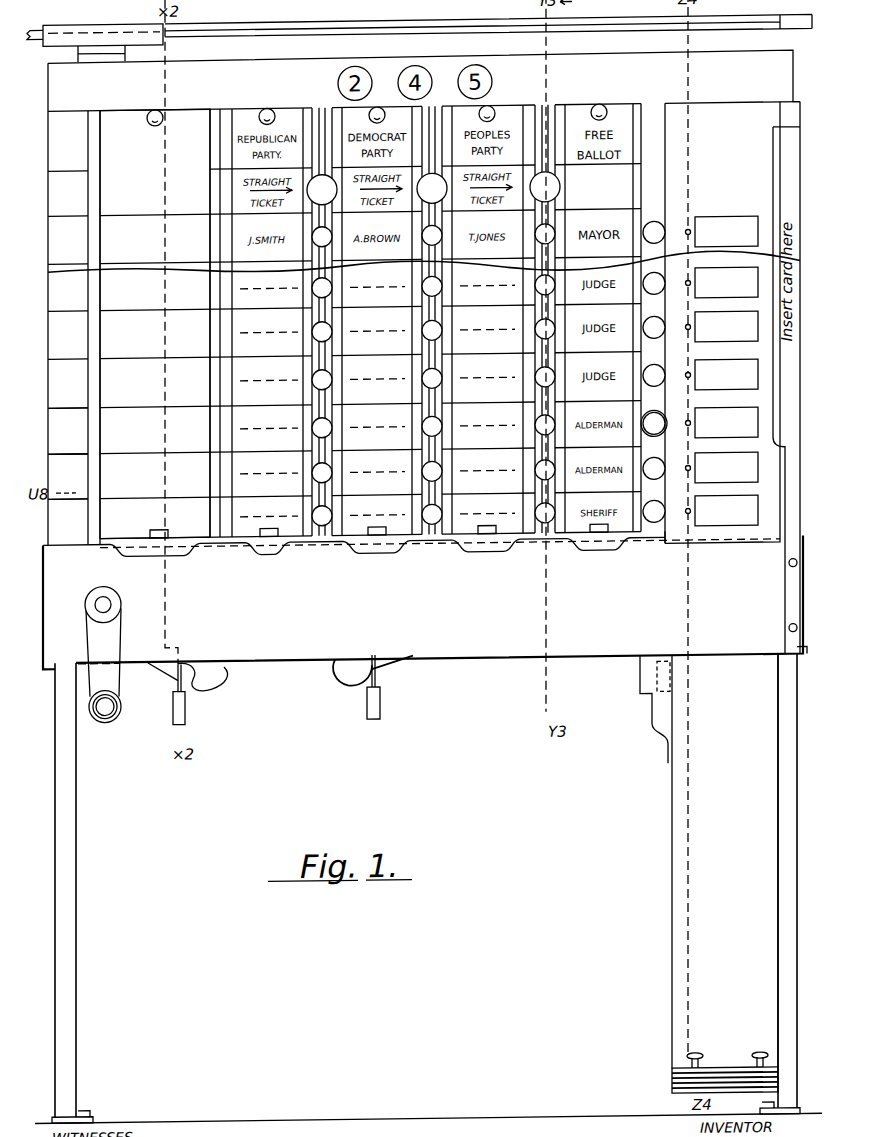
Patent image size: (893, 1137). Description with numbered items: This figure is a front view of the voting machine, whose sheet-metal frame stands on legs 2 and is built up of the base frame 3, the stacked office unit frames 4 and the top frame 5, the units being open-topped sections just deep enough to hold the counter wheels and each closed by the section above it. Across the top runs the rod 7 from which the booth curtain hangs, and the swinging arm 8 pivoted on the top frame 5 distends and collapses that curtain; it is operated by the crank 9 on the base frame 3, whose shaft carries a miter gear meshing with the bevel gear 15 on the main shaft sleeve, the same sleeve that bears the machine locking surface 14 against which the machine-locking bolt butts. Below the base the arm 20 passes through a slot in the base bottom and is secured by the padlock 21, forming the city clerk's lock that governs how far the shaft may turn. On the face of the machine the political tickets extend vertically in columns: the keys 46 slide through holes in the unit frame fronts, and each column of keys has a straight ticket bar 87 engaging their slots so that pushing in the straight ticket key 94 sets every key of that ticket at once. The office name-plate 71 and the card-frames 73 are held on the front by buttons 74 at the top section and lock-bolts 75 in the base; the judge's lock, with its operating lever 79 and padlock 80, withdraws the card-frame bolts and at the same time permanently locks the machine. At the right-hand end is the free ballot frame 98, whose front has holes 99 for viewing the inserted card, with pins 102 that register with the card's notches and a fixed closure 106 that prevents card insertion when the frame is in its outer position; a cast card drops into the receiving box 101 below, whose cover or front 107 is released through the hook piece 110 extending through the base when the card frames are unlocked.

The legs 2 is at (68, 831).
The base frame 3 is at (425, 602).
The unit frames 4 is at (68, 373).
The top frame 5 is at (74, 141).
The rod 7 is at (529, 28).
The swinging arm 8 is at (376, 25).
The crank 9 is at (108, 645).
The machine locking surface 14 is at (58, 425).
The bevel gear 15 is at (76, 449).
The arm 20 is at (200, 669).
The padlock 21 is at (186, 706).
The keys 46 is at (333, 289).
The name-plate 71 is at (155, 411).
The card-frames 73 is at (233, 472).
The buttons 74 is at (159, 110).
The lock-bolts 75 is at (168, 538).
The operating lever 79 is at (373, 685).
The padlock 80 is at (382, 707).
The straight ticket bar 87 is at (333, 401).
The straight ticket key 94 is at (433, 188).
The frame 98 is at (732, 379).
The holes 99 is at (726, 230).
The receiving box 101 is at (690, 866).
The pin 102 is at (691, 335).
The fixed closure 106 is at (787, 450).
The cover or front 107 is at (716, 800).
The hook piece 110 is at (645, 683).